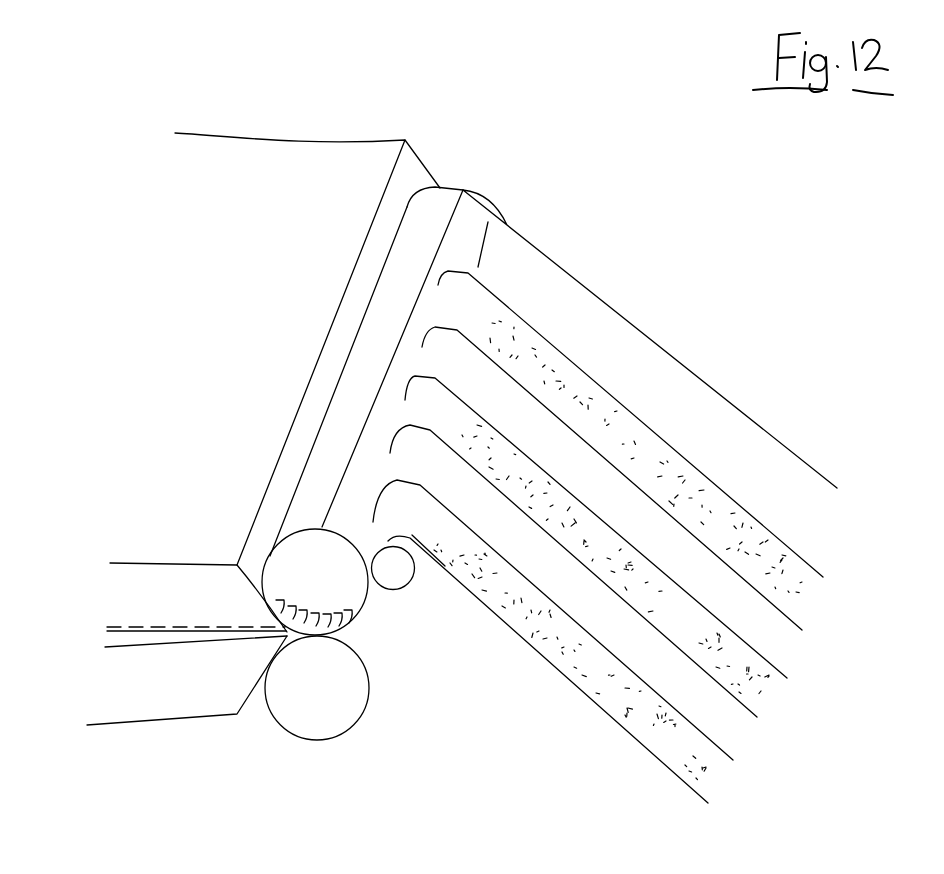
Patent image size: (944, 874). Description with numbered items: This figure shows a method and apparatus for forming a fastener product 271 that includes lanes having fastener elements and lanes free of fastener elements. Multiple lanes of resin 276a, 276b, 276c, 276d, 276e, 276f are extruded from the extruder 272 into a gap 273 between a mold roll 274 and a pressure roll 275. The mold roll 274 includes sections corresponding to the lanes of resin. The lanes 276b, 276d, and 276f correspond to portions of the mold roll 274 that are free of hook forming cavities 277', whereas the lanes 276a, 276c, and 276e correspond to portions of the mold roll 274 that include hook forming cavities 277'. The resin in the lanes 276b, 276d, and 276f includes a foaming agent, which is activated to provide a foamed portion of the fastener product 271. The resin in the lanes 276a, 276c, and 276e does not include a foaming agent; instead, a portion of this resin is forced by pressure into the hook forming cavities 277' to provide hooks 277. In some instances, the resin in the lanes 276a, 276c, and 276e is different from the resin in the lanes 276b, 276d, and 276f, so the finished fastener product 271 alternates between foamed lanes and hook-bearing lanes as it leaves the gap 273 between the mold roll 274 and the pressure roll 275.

The fastener product 271 is at (840, 440).
The extruder 272 is at (150, 607).
The gap 273 is at (343, 637).
The mold roll 274 is at (337, 585).
The pressure roll 275 is at (345, 708).
The lane of resin 276a is at (703, 782).
The lane of resin 276b is at (712, 728).
The lane of resin 276c is at (758, 693).
The lane of resin 276d is at (767, 648).
The lane of resin 276e is at (820, 602).
The lane of resin 276f is at (658, 424).
The hooks 277 is at (570, 662).
The hook forming cavities 277' is at (403, 611).